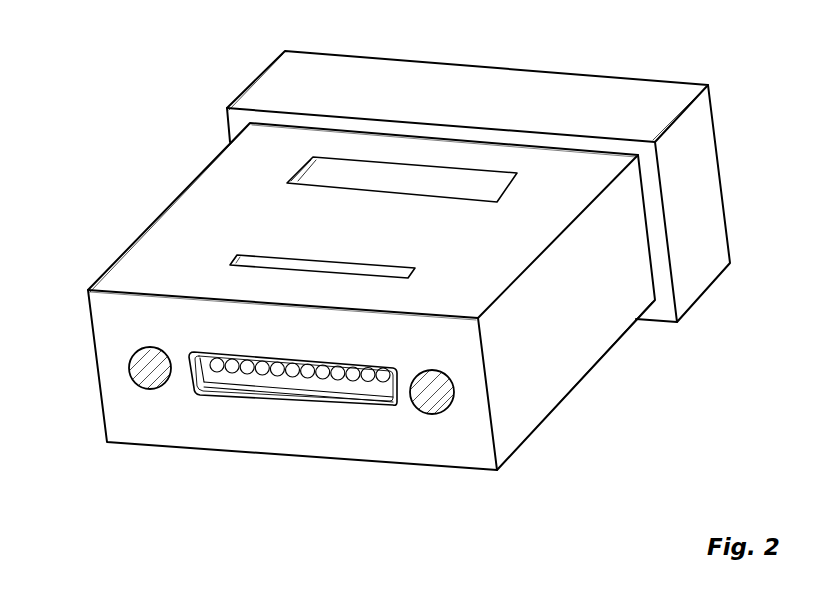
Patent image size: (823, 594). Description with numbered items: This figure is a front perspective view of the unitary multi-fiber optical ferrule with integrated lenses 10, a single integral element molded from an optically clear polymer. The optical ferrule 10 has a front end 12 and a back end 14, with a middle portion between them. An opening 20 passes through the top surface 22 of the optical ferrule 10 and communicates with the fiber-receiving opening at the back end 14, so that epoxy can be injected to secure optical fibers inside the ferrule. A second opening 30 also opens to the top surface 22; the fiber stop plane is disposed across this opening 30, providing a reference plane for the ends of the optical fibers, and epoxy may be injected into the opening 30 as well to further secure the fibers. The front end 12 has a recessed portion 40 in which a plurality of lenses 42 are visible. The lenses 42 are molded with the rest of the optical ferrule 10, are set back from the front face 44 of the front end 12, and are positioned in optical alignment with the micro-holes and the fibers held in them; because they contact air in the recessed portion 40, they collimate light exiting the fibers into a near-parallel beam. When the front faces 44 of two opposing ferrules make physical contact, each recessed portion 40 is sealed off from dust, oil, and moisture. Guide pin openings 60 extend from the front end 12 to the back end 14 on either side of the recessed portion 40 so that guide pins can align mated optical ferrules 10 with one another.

The unitary multi-fiber optical ferrule with integrated lenses 10 is at (176, 114).
The front end 12 is at (404, 470).
The back end 14 is at (661, 72).
The opening 20 is at (483, 183).
The top surface 22 is at (504, 256).
The opening 30 is at (253, 256).
The recessed portion 40 is at (187, 365).
The plurality of lenses 42 is at (355, 378).
The front face 44 is at (472, 457).
The guide pin openings 60 is at (448, 395).